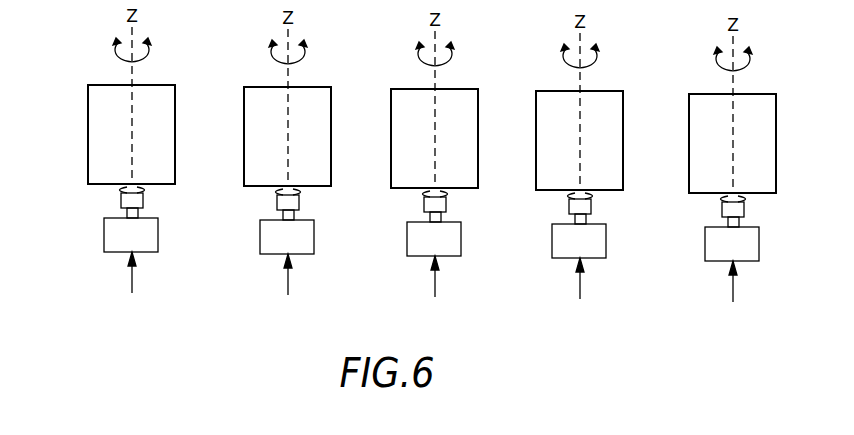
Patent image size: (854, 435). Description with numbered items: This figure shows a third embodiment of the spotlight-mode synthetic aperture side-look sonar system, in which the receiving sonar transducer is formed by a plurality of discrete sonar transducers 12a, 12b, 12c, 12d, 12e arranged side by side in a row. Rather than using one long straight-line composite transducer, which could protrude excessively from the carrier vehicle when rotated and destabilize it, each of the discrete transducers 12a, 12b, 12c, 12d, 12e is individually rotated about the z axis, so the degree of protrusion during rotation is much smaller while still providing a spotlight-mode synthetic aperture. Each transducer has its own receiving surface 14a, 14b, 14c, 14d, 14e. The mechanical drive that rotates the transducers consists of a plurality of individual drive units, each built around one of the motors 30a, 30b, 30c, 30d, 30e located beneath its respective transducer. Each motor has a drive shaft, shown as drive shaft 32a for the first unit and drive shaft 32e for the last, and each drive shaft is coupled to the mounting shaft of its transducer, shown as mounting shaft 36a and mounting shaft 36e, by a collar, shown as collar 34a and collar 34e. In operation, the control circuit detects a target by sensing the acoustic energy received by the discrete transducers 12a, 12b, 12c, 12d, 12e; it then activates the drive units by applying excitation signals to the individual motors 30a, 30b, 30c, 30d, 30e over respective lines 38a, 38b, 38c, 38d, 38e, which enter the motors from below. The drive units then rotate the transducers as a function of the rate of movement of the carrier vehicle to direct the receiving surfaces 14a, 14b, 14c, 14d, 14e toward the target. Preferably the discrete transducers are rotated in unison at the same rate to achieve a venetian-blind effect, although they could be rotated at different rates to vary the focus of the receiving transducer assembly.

The discrete sonar transducer 12a is at (107, 85).
The discrete sonar transducer 12b is at (262, 87).
The discrete sonar transducer 12c is at (410, 89).
The discrete sonar transducer 12d is at (555, 91).
The discrete sonar transducer 12e is at (708, 94).
The receiving surface 14a is at (98, 120).
The receiving surface 14b is at (310, 100).
The receiving surface 14c is at (462, 103).
The receiving surface 14d is at (606, 106).
The receiving surface 14e is at (757, 113).
The motor 30a is at (108, 240).
The motor 30b is at (265, 243).
The motor 30c is at (412, 245).
The motor 30d is at (557, 246).
The motor 30e is at (710, 248).
The drive shaft 32a is at (126, 212).
The drive shaft 32e is at (727, 221).
The collar 34a is at (121, 200).
The collar 34e is at (722, 209).
The mounting shaft 36a is at (149, 193).
The mounting shaft 36e is at (748, 201).
The line 38a is at (130, 284).
The line 38b is at (286, 284).
The line 38c is at (433, 286).
The line 38d is at (578, 288).
The line 38e is at (731, 290).